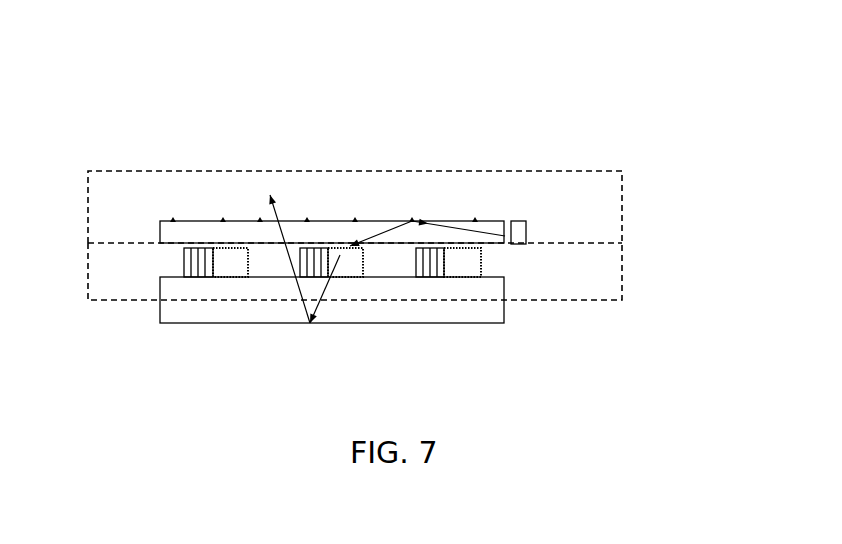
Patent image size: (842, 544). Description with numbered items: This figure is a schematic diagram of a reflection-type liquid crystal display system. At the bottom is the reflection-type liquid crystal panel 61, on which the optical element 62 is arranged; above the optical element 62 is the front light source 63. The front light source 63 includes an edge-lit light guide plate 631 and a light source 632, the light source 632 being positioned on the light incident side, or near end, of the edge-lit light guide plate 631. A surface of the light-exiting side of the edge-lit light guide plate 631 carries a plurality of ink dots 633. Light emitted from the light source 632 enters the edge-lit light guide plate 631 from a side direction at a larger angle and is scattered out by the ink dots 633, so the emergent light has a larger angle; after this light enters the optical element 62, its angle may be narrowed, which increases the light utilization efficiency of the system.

The reflection-type liquid crystal panel 61 is at (197, 312).
The optical element 62 is at (625, 292).
The front light source 63 is at (463, 168).
The edge-lit light guide plate 631 is at (200, 232).
The light source 632 is at (517, 233).
The ink dots 633 is at (412, 221).